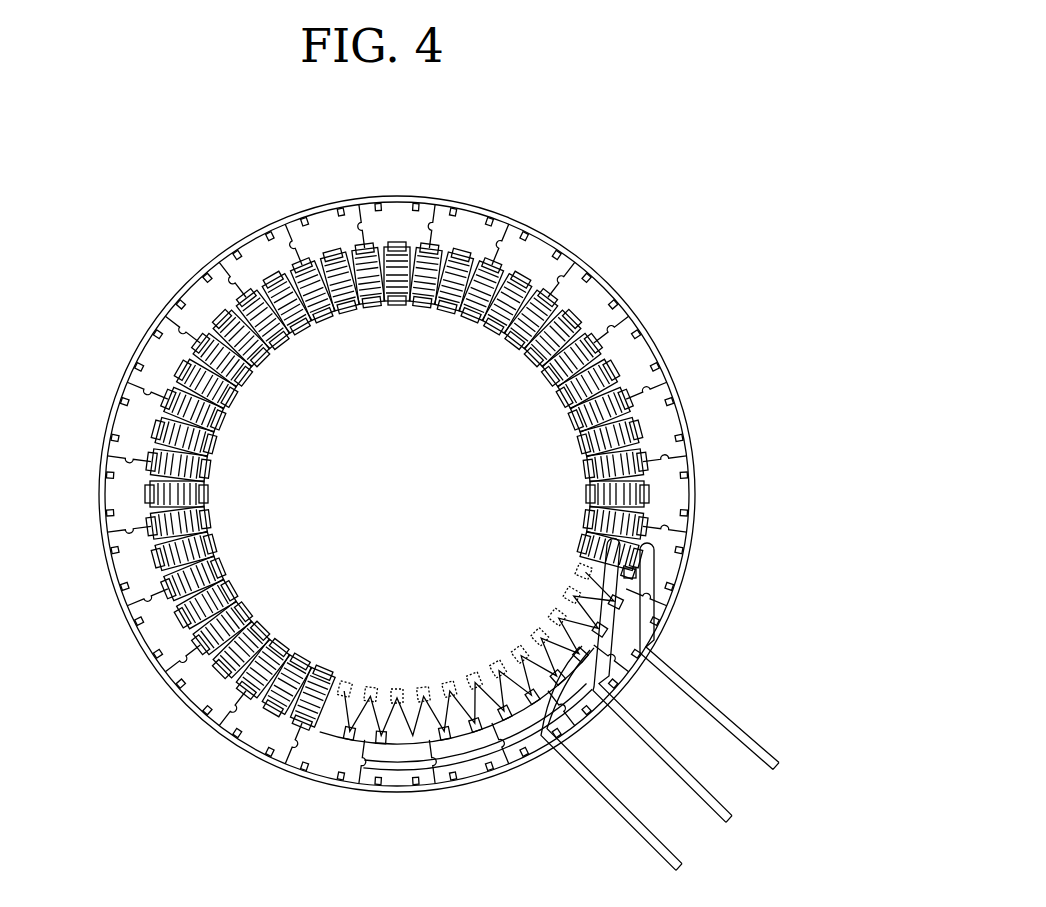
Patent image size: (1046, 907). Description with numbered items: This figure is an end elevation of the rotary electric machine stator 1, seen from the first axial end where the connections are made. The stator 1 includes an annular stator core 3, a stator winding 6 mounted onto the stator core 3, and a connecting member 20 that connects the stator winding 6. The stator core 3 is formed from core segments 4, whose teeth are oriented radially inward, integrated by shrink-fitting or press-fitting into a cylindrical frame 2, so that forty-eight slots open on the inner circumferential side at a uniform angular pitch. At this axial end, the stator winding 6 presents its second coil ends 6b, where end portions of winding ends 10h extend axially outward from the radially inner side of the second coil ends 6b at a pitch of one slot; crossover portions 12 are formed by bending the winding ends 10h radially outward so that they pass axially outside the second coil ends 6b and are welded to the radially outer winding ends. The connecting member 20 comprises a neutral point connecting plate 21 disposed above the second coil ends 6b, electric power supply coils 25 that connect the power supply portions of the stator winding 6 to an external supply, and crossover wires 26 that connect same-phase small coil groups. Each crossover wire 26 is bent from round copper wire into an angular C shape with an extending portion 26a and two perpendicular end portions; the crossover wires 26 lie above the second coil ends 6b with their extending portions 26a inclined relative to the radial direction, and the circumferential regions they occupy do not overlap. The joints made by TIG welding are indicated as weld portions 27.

The stator 1 is at (102, 139).
The cylindrical frame 2 is at (100, 440).
The stator core 3 is at (117, 497).
The core segment 4 is at (126, 554).
The stator winding 6 is at (203, 335).
The second coil ends 6b is at (353, 283).
The winding end 10h is at (260, 307).
The crossover portion 12 is at (260, 318).
The connecting member 20 is at (752, 557).
The neutral point connecting plate 21 is at (599, 606).
The electric power supply coil 25 is at (664, 567).
The crossover wire 26 is at (553, 651).
The extending portion 26a is at (390, 743).
The weld portion 27 is at (180, 375).